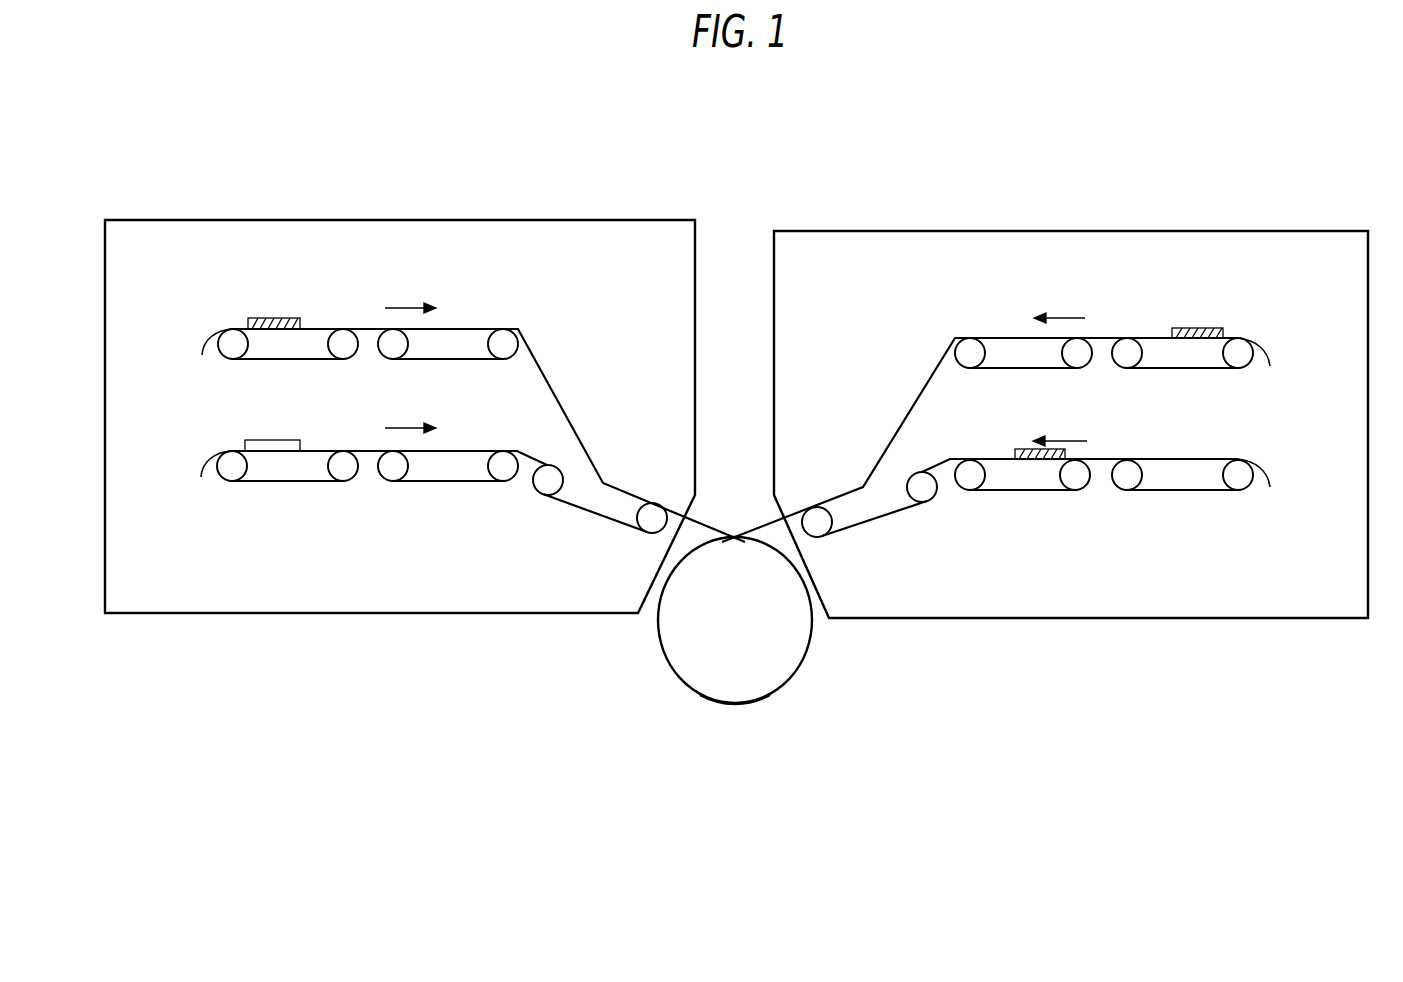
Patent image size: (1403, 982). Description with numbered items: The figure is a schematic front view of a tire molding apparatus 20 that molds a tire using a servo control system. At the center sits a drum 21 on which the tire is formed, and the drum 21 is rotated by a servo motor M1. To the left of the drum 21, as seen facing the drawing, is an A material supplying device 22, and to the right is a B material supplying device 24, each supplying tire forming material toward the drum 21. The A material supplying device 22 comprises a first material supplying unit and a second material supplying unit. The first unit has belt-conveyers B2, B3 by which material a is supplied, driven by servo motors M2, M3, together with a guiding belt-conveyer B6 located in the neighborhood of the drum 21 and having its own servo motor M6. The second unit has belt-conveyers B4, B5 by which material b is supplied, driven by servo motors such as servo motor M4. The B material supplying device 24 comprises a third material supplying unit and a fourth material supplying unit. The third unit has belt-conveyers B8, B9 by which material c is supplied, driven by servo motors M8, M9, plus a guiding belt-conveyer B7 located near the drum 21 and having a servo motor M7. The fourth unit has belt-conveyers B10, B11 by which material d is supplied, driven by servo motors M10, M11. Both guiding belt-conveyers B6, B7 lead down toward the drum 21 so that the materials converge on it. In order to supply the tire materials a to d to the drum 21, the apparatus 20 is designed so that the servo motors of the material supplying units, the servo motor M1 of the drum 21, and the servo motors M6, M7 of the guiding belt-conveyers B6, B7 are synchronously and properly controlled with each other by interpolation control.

The tire molding apparatus 20 is at (940, 176).
The drum 21 is at (735, 704).
The A material supplying device 22 is at (395, 219).
The B material supplying device 24 is at (1072, 231).
The servo motor M1 is at (735, 620).
The belt-conveyer B2 is at (290, 361).
The servo motor M2 is at (345, 360).
The belt-conveyer B3 is at (449, 361).
The servo motor M3 is at (505, 360).
The belt-conveyer B4 is at (290, 483).
The servo motor M4 is at (346, 482).
The belt-conveyer B5 is at (448, 483).
The servo motor M9 is at (505, 482).
The guiding belt-conveyer B6 is at (594, 512).
The servo motor M6 is at (650, 533).
The guiding belt-conveyer B7 is at (876, 520).
The servo motor M7 is at (925, 496).
The belt-conveyer B8 is at (1182, 491).
The servo motor M8 is at (1240, 490).
The belt-conveyer B9 is at (1025, 491).
The belt-conveyer B10 is at (1183, 369).
The servo motor M10 is at (1238, 368).
The belt-conveyer B11 is at (1025, 369).
The servo motor M11 is at (970, 368).